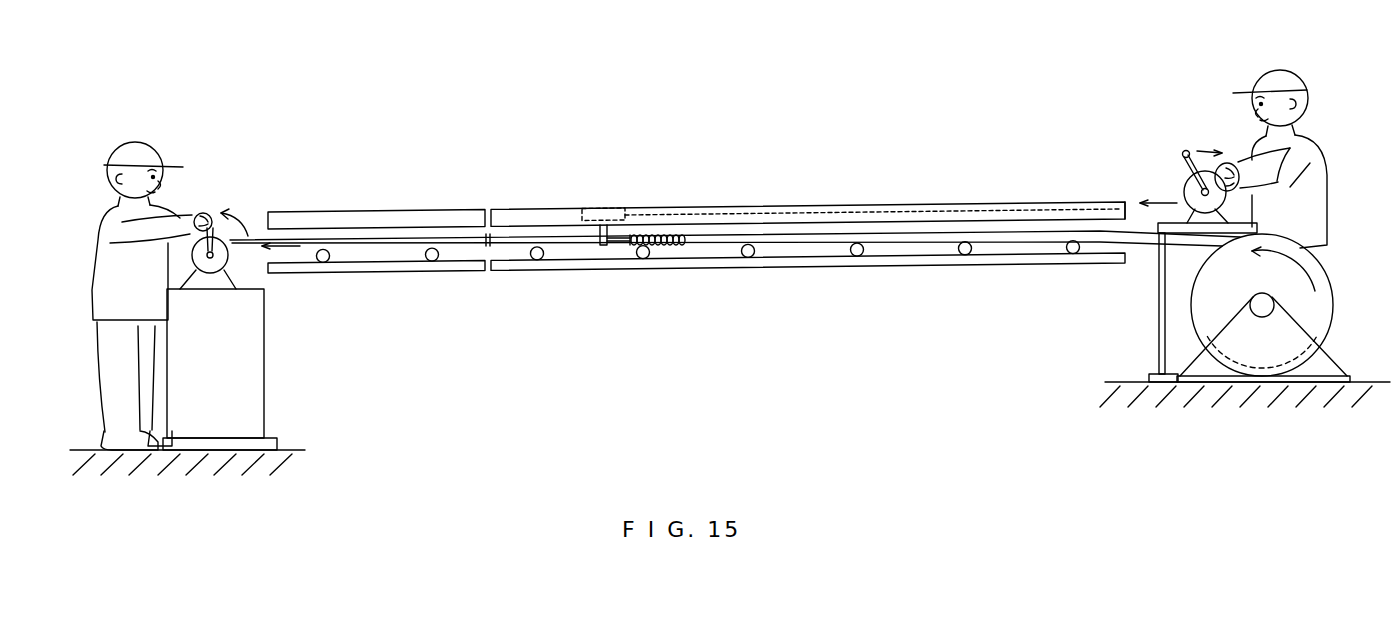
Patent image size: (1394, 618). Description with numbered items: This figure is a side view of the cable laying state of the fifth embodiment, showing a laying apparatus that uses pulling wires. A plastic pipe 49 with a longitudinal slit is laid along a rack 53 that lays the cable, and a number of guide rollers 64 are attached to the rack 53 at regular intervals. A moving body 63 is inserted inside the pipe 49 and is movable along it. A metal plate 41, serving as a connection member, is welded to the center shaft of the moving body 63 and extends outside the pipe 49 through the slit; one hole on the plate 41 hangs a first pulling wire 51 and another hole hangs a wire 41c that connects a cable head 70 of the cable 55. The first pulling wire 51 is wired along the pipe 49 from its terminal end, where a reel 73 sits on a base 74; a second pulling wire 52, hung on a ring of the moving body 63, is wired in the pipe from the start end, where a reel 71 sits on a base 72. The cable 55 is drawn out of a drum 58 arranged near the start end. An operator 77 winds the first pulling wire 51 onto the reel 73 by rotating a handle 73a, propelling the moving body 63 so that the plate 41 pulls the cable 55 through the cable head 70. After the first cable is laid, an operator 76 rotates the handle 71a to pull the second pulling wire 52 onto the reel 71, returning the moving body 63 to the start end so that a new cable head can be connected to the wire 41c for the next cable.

The operator 77 is at (132, 141).
The handle 73a is at (218, 231).
The reel 73 is at (232, 260).
The base 74 is at (262, 378).
The first pulling wire 51 is at (250, 238).
The pipe 49 is at (531, 209).
The moving body 63 is at (610, 209).
The plate 41 is at (600, 246).
The wire 41c is at (616, 243).
The cable head 70 is at (660, 247).
The cable 55 is at (812, 235).
The rack 53 is at (903, 262).
The guide rollers 64 is at (966, 251).
The second pulling wire 52 is at (1127, 202).
The reel 71 is at (1186, 180).
The handle 71a is at (1186, 150).
The operator 76 is at (1290, 72).
The base 72 is at (1160, 322).
The drum 58 is at (1334, 303).